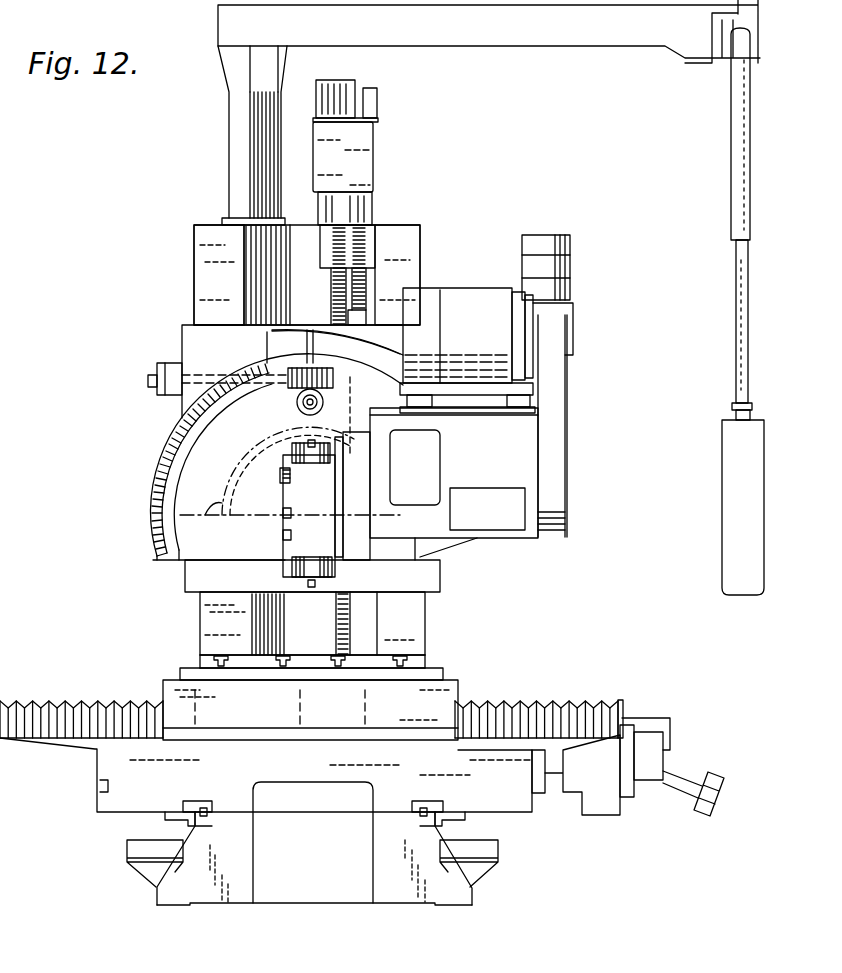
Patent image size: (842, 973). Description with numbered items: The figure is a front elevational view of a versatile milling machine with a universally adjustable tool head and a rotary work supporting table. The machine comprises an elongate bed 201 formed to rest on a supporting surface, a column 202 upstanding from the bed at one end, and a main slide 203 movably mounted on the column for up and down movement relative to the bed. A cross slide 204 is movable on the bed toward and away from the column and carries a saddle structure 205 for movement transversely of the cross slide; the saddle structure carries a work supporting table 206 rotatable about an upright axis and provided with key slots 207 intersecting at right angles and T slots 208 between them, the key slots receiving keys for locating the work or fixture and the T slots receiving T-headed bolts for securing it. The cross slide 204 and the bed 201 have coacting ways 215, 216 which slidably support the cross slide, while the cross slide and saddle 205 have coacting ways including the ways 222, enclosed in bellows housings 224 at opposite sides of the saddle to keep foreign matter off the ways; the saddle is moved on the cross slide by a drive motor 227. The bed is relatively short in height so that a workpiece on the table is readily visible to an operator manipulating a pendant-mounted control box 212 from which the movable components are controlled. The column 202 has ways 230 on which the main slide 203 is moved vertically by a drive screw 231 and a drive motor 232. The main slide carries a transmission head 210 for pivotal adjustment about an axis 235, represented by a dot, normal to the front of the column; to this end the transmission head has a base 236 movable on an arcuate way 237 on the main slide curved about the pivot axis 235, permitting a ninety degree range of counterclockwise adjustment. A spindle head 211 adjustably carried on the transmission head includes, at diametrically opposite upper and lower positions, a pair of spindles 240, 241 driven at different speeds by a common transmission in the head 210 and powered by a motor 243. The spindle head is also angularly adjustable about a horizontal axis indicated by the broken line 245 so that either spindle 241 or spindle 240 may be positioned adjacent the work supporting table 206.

The bed 201 is at (218, 893).
The column 202 is at (306, 254).
The main slide 203 is at (182, 343).
The cross slide 204 is at (104, 786).
The saddle structure 205 is at (375, 722).
The work supporting table 206 is at (433, 672).
The key slots 207 is at (373, 653).
The T slots 208 is at (420, 656).
The transmission head 210 is at (512, 441).
The spindle head 211 is at (283, 535).
The control box 212 is at (722, 492).
The ways 215 is at (170, 815).
The ways 216 is at (200, 803).
The ways 222 is at (228, 738).
The bellows housing 224 is at (70, 706).
The motor 227 is at (606, 805).
The ways 230 is at (208, 284).
The drive screw 231 is at (334, 297).
The drive motor 232 is at (362, 131).
The pivot axis 235 is at (312, 518).
The base 236 is at (378, 355).
The arcuate way 237 is at (152, 483).
The spindle 240 is at (292, 513).
The spindle 241 is at (300, 584).
The motor 243 is at (475, 292).
The horizontal axis 245 is at (195, 515).